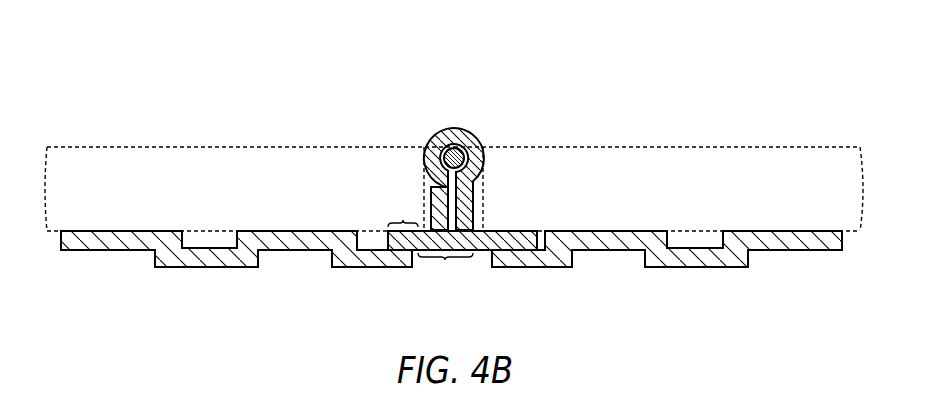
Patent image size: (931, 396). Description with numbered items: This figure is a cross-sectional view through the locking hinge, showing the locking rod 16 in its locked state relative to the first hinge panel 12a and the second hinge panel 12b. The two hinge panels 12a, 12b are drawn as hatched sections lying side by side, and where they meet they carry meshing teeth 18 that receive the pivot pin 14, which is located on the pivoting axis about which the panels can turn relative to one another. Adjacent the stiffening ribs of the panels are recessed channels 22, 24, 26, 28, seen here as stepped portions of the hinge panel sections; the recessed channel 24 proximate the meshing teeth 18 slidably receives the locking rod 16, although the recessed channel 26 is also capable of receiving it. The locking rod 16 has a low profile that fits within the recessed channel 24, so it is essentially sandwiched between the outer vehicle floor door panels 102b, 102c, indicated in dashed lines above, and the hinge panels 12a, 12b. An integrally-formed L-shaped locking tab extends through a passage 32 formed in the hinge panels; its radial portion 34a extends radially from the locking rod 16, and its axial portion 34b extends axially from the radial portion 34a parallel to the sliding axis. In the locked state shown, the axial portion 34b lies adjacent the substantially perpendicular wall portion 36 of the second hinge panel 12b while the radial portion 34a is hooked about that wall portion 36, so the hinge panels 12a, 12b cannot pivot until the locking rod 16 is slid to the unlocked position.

The first hinge panel 12a is at (614, 216).
The second hinge panel 12b is at (292, 216).
The pivot pin 14 is at (445, 148).
The locking rod 16 is at (532, 227).
The meshing teeth 18 is at (448, 116).
The recessed channel 22 is at (686, 246).
The recessed channel 24 is at (504, 246).
The recessed channel 26 is at (367, 246).
The recessed channel 28 is at (197, 246).
The passage 32 is at (470, 228).
The radial portion 34a is at (445, 271).
The axial portion 34b is at (402, 212).
The perpendicular wall portion 36 is at (431, 197).
The outer vehicle floor door panel 102b is at (142, 157).
The outer vehicle floor door panel 102c is at (737, 157).